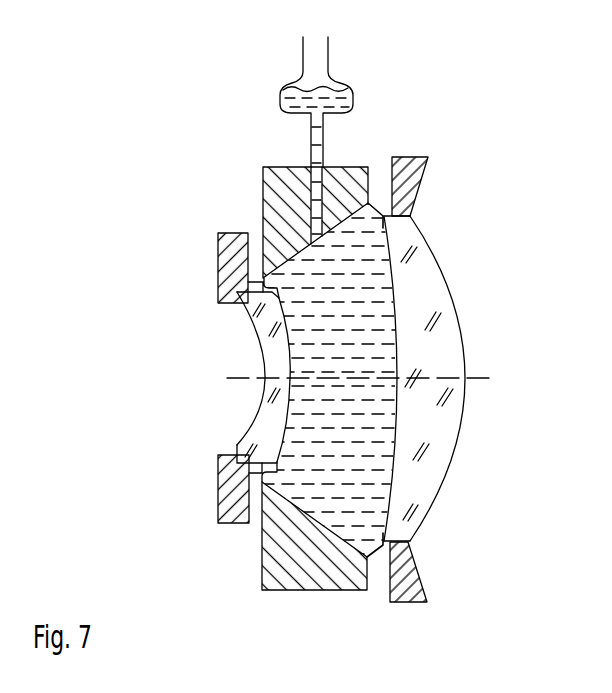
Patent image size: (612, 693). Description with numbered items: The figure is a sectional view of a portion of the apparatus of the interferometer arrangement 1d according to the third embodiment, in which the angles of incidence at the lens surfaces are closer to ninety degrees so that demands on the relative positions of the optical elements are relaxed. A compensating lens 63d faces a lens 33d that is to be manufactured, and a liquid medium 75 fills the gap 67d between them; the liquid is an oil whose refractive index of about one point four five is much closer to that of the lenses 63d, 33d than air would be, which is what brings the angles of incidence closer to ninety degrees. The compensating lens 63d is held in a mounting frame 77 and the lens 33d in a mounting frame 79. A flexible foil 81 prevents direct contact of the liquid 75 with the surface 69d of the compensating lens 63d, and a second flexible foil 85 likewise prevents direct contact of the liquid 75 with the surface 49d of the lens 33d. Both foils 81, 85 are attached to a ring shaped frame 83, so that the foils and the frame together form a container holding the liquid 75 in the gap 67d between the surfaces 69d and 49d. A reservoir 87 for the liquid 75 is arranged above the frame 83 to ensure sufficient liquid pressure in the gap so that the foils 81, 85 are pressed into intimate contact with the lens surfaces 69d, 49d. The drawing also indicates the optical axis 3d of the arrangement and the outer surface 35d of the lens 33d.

The interferometer arrangement 1d is at (166, 114).
The reservoir 87 is at (350, 83).
The ring shaped frame 83 is at (266, 167).
The flexible foil 85 is at (381, 205).
The mounting frame 79 is at (410, 157).
The mounting frame 77 is at (218, 235).
The flexible foil 81 is at (262, 283).
The compensating lens 63d is at (242, 299).
The surface 69d is at (287, 337).
The optical axis 3d is at (482, 373).
The lens to be manufactured 33d is at (420, 233).
The outer lens surface 35d is at (465, 413).
The surface 49d is at (388, 481).
The liquid medium 75 is at (357, 423).
The gap 67d is at (311, 497).